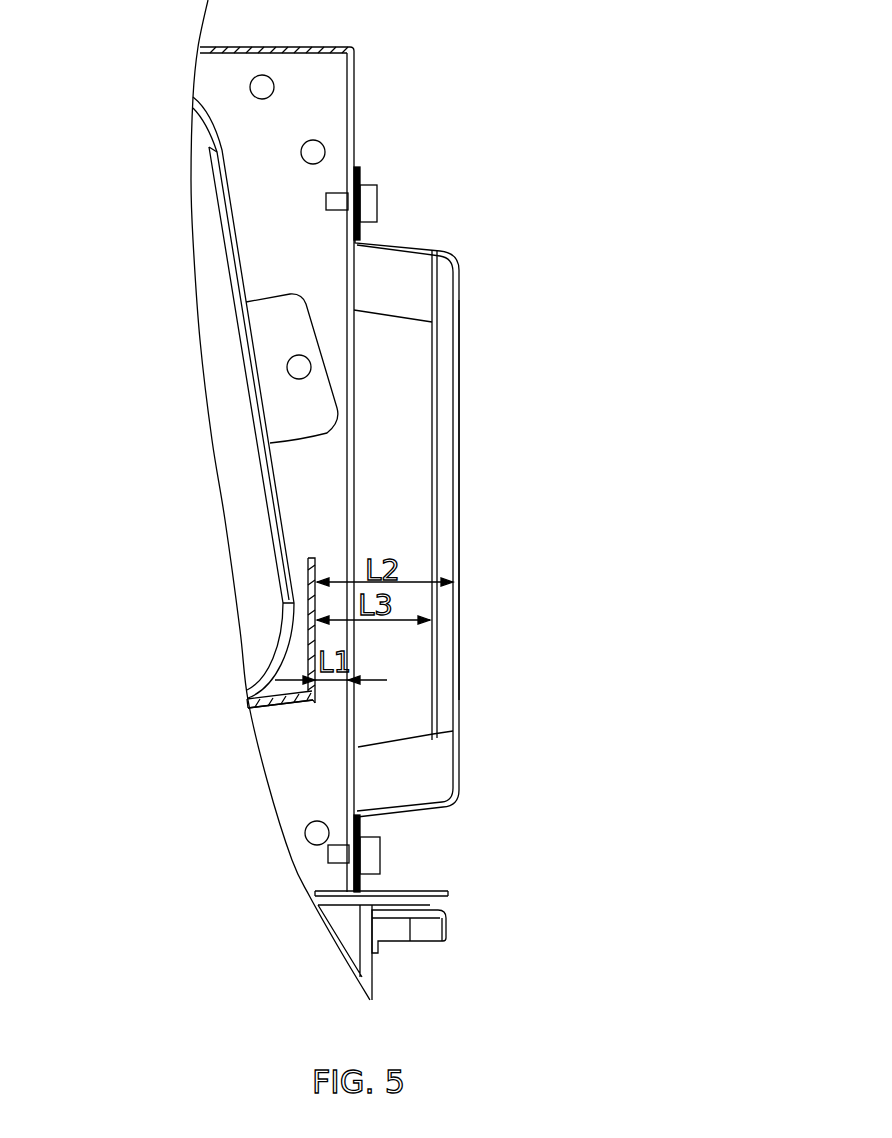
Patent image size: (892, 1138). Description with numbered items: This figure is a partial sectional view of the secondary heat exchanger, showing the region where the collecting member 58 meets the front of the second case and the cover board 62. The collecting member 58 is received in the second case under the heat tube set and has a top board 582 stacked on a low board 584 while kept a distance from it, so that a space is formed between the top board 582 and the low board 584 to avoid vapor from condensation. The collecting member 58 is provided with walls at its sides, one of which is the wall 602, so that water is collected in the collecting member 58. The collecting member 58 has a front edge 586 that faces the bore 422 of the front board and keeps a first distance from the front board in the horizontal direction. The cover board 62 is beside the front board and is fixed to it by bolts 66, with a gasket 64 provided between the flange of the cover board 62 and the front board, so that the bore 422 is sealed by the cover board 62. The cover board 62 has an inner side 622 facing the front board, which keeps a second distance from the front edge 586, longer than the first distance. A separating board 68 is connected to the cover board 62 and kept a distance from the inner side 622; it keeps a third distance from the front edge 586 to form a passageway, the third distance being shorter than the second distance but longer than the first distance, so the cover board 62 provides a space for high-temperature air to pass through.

The bore 422 is at (355, 472).
The gasket 64 is at (357, 167).
The bolts 66 is at (370, 197).
The cover board 62 is at (453, 260).
The inner side 622 is at (457, 412).
The separating board 68 is at (432, 297).
The wall 602 is at (308, 573).
The collecting member 58 is at (180, 768).
The top board 582 is at (247, 700).
The low board 584 is at (250, 712).
The front edge 586 is at (315, 703).